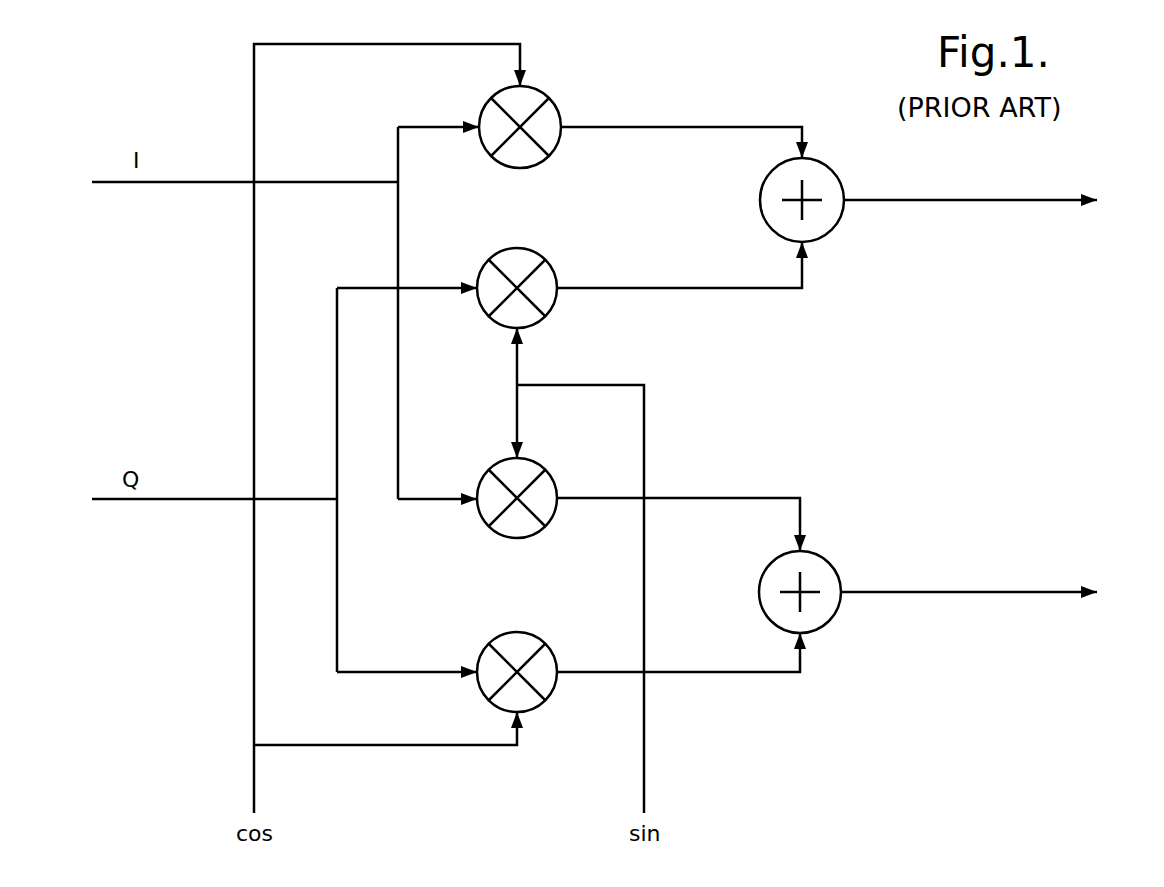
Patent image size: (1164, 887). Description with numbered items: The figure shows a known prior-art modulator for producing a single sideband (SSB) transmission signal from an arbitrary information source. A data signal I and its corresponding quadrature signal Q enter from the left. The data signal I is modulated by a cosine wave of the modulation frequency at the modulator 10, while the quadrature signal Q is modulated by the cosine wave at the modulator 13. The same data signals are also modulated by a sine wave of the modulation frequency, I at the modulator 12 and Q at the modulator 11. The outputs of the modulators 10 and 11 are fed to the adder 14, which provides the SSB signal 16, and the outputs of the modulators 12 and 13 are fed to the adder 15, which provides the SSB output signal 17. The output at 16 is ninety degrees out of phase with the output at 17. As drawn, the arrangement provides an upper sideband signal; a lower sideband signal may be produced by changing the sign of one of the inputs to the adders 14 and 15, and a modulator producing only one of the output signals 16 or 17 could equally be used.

The modulator 10 is at (550, 150).
The modulator 11 is at (546, 310).
The modulator 12 is at (536, 533).
The modulator 13 is at (538, 707).
The adder 14 is at (833, 228).
The adder 15 is at (829, 622).
The SSB signal 16 is at (987, 200).
The SSB output signal 17 is at (986, 593).